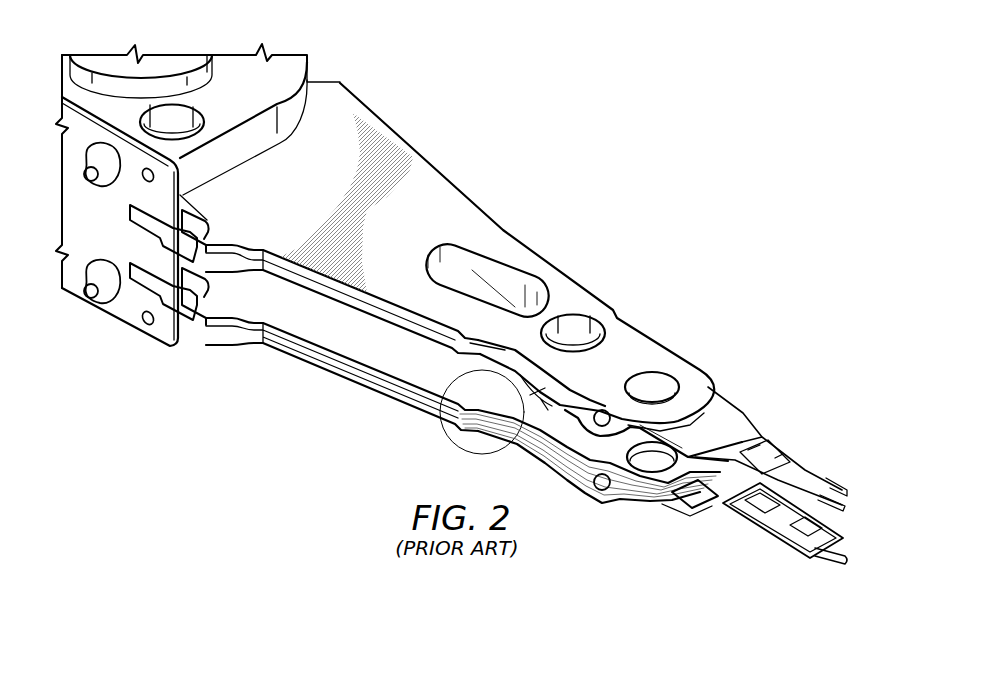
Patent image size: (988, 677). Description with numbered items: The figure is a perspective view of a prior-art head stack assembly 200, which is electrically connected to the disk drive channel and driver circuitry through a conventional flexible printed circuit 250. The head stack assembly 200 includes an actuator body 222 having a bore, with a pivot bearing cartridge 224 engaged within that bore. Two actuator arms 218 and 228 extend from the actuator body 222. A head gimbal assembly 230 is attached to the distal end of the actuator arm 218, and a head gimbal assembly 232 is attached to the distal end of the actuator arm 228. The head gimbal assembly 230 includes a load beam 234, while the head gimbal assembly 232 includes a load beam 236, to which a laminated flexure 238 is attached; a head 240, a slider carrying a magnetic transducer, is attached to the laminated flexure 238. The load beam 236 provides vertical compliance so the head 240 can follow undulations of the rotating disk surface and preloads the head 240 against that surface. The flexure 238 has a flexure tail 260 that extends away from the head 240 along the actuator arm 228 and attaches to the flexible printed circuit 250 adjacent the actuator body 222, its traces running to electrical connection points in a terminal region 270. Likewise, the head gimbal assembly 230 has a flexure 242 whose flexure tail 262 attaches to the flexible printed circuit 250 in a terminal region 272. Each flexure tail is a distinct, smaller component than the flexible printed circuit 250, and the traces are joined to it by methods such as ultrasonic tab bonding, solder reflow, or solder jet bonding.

The head stack assembly 200 is at (566, 157).
The actuator arm 218 is at (457, 192).
The actuator body 222 is at (198, 179).
The pivot bearing cartridge 224 is at (113, 60).
The actuator arm 228 is at (325, 349).
The head gimbal assembly 230 is at (722, 408).
The head gimbal assembly 232 is at (688, 493).
The load beam 234 is at (750, 432).
The load beam 236 is at (706, 505).
The laminated flexure 238 is at (776, 520).
The head 240 is at (790, 537).
The flexure 242 is at (823, 482).
The flexible printed circuit 250 is at (160, 341).
The flexure tail 260 is at (518, 438).
The flexure tail 262 is at (442, 418).
The terminal region 270 is at (130, 308).
The terminal region 272 is at (135, 232).